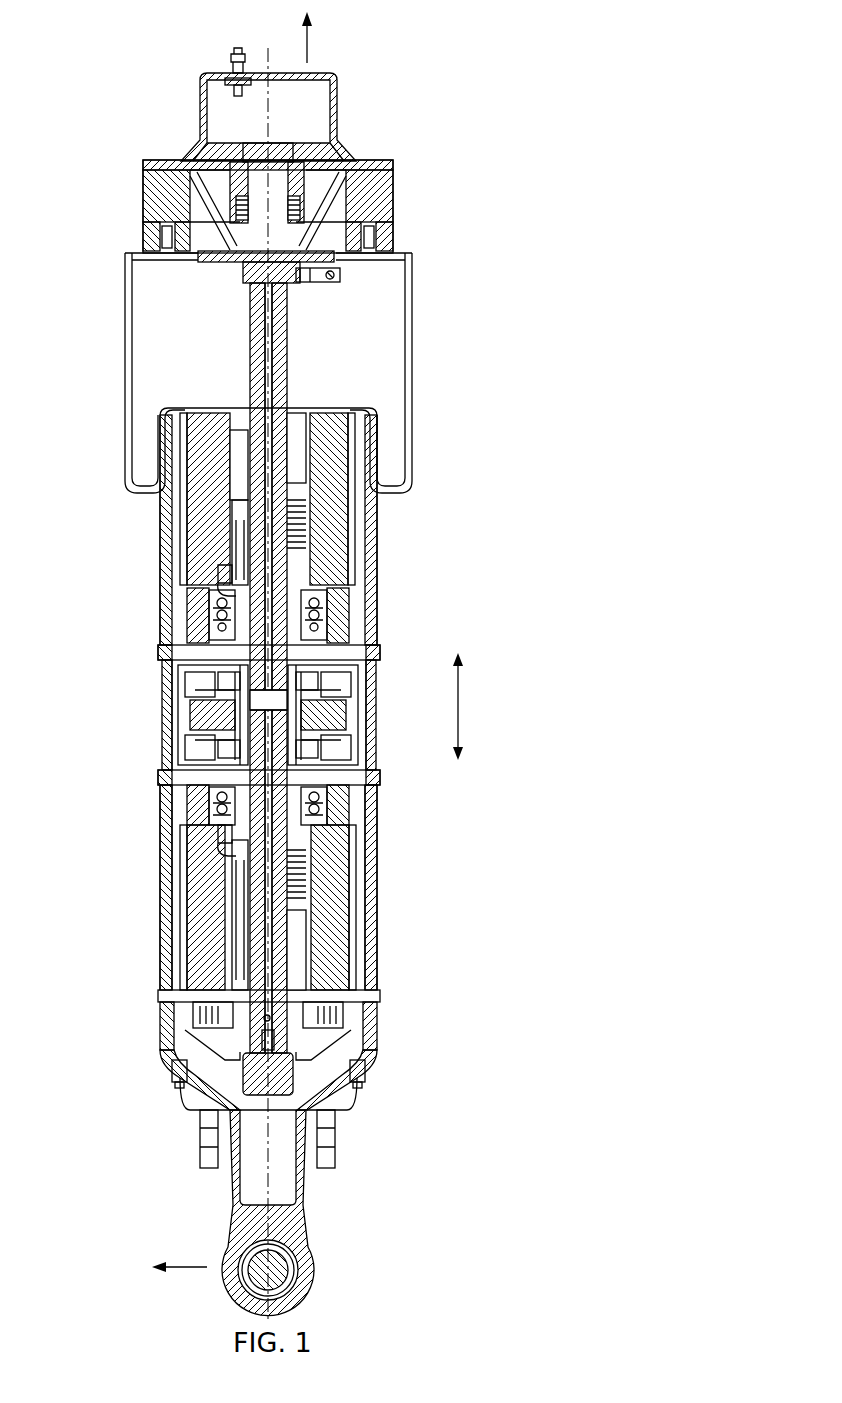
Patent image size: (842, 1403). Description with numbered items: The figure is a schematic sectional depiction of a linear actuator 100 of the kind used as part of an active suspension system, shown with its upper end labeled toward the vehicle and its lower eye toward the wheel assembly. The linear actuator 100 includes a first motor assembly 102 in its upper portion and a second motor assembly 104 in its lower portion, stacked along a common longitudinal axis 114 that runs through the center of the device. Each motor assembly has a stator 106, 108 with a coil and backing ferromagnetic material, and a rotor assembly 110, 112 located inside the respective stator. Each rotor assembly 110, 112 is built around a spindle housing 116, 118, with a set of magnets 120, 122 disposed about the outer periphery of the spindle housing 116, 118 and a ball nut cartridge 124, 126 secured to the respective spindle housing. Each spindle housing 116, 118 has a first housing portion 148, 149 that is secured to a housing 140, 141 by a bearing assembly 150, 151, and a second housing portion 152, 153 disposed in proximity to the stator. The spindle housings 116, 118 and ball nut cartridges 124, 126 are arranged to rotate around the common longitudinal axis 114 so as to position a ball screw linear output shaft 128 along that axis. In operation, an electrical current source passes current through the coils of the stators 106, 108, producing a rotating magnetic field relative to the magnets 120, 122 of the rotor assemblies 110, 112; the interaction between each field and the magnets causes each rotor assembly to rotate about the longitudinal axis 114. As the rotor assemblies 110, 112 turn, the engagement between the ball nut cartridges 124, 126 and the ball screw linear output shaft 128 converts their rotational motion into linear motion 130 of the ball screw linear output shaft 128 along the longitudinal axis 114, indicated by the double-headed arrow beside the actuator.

The linear actuator 100 is at (178, 50).
The first motor assembly 102 is at (385, 507).
The second motor assembly 104 is at (383, 848).
The stator 106 is at (183, 528).
The stator 108 is at (185, 913).
The rotor assembly 110 is at (335, 557).
The rotor assembly 112 is at (328, 903).
The longitudinal axis 114 is at (290, 300).
The spindle housing 116 is at (227, 587).
The spindle housing 118 is at (233, 837).
The set of magnets 120 is at (250, 558).
The set of magnets 122 is at (227, 875).
The ball nut cartridge 124 is at (293, 535).
The ball nut cartridge 126 is at (297, 877).
The ball screw linear output shaft 128 is at (255, 1035).
The linear motion 130 is at (458, 706).
The housing 140 is at (167, 503).
The housing 141 is at (163, 955).
The first housing portion 148 is at (303, 612).
The first housing portion 149 is at (303, 798).
The bearing assembly 150 is at (198, 625).
The bearing assembly 151 is at (210, 793).
The second housing portion 152 is at (240, 458).
The second housing portion 153 is at (303, 952).